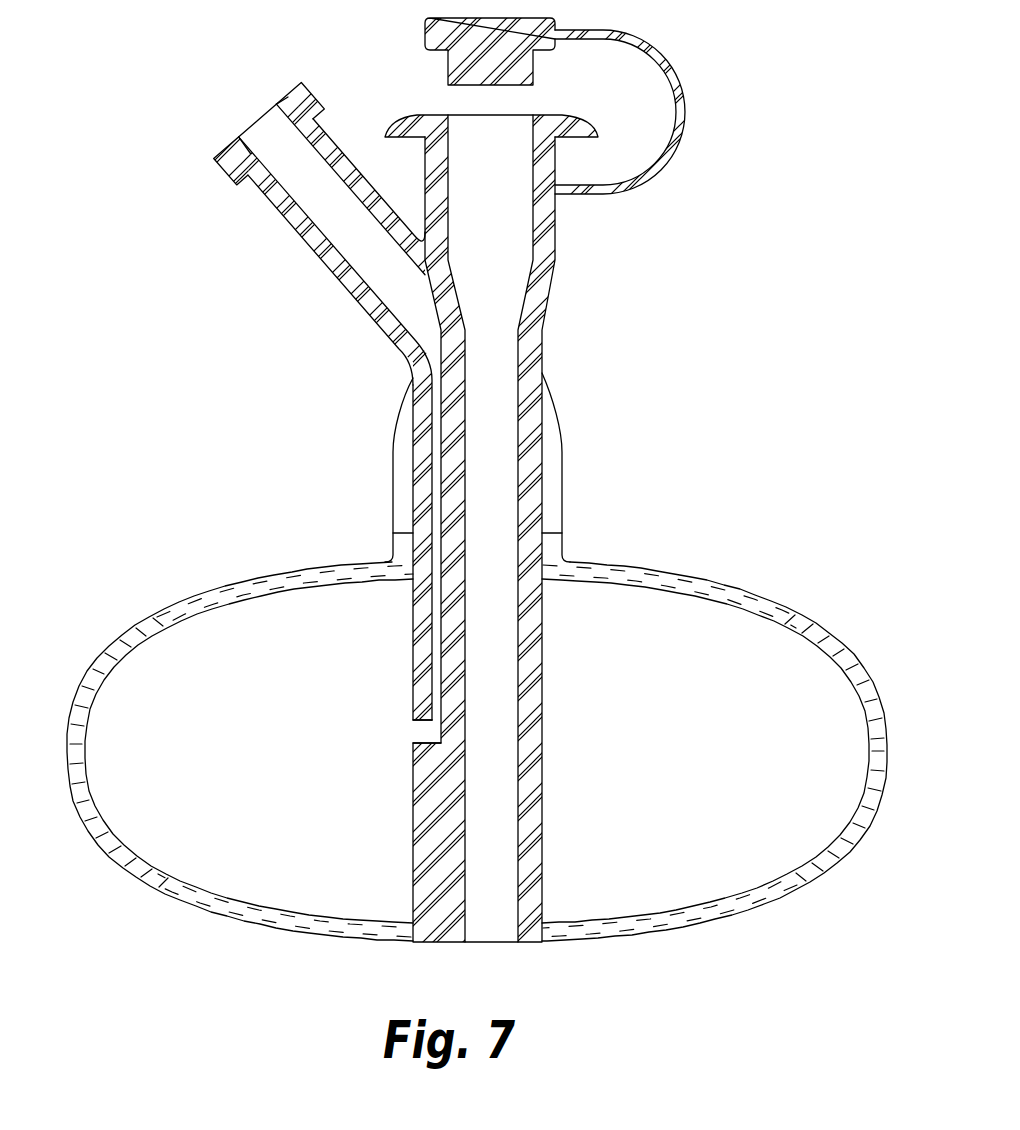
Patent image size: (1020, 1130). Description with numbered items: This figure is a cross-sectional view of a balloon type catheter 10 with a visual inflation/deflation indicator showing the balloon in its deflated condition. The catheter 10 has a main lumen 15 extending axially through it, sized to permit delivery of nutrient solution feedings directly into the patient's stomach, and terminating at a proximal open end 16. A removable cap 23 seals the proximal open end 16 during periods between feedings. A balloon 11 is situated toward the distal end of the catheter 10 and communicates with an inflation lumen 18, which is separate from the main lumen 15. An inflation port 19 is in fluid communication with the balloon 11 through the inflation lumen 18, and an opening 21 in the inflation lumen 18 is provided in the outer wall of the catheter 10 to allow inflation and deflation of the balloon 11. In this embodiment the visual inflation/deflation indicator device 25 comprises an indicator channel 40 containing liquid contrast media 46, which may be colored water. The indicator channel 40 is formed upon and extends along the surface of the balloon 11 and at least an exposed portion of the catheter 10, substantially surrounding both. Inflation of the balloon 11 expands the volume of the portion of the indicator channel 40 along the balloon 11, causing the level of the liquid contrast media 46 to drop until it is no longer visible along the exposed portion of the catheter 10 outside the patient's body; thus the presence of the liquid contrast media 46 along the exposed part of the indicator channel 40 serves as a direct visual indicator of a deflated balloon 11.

The catheter 10 is at (742, 215).
The balloon 11 is at (474, 748).
The main lumen 15 is at (518, 350).
The proximal open end 16 is at (460, 113).
The inflation lumen 18 is at (312, 212).
The inflation port 19 is at (252, 120).
The opening 21 is at (412, 726).
The removable cap 23 is at (512, 70).
The visual inflation/deflation indicator device 25 is at (845, 825).
The indicator channel 40 is at (549, 466).
The liquid contrast media 46 is at (116, 650).